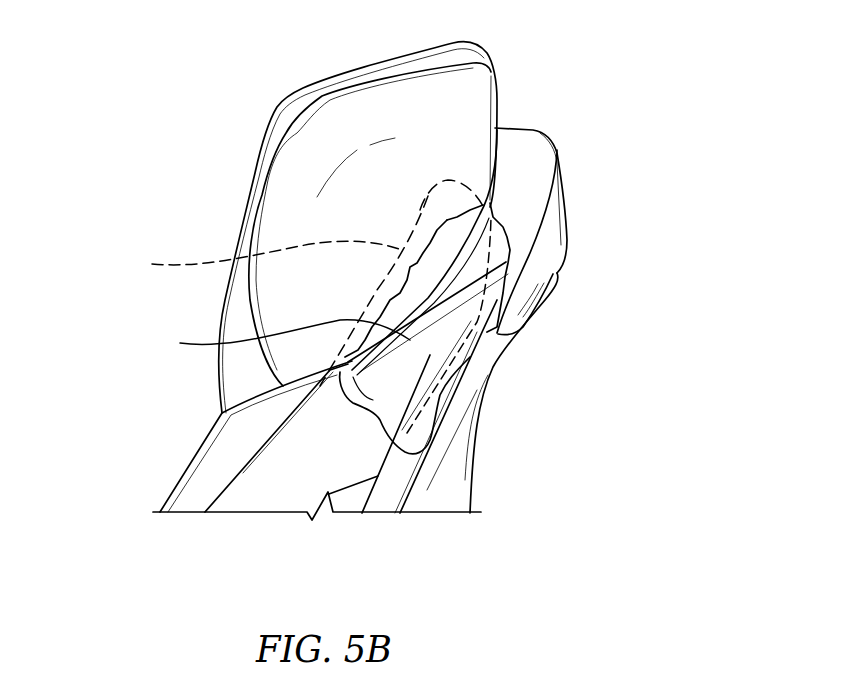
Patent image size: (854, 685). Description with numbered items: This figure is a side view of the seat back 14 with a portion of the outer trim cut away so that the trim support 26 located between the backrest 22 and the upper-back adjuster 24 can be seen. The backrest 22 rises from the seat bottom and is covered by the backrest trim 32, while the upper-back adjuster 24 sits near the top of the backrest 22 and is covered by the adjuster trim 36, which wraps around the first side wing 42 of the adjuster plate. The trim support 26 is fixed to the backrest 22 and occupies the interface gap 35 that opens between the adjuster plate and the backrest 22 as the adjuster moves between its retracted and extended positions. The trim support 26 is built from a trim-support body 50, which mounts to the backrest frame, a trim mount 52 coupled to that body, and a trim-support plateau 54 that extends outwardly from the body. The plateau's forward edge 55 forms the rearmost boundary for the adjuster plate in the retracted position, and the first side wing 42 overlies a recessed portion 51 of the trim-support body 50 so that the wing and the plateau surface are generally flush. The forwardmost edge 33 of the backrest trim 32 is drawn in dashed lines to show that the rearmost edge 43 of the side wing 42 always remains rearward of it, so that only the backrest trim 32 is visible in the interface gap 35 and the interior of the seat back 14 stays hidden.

The seat back 14 is at (614, 160).
The backrest 22 is at (547, 440).
The upper-back adjuster 24 is at (158, 110).
The trim support 26 is at (490, 342).
The backrest trim 32 is at (257, 484).
The forwardmost edge 33 is at (262, 258).
The interface gap 35 is at (430, 408).
The adjuster trim 36 is at (323, 218).
The first side wing 42 is at (452, 263).
The rearmost edge 43 is at (490, 220).
The trim-support body 50 is at (511, 263).
The recessed portion 51 is at (461, 284).
The trim mount 52 is at (450, 176).
The trim-support plateau 54 is at (430, 353).
The forward edge 55 is at (279, 337).